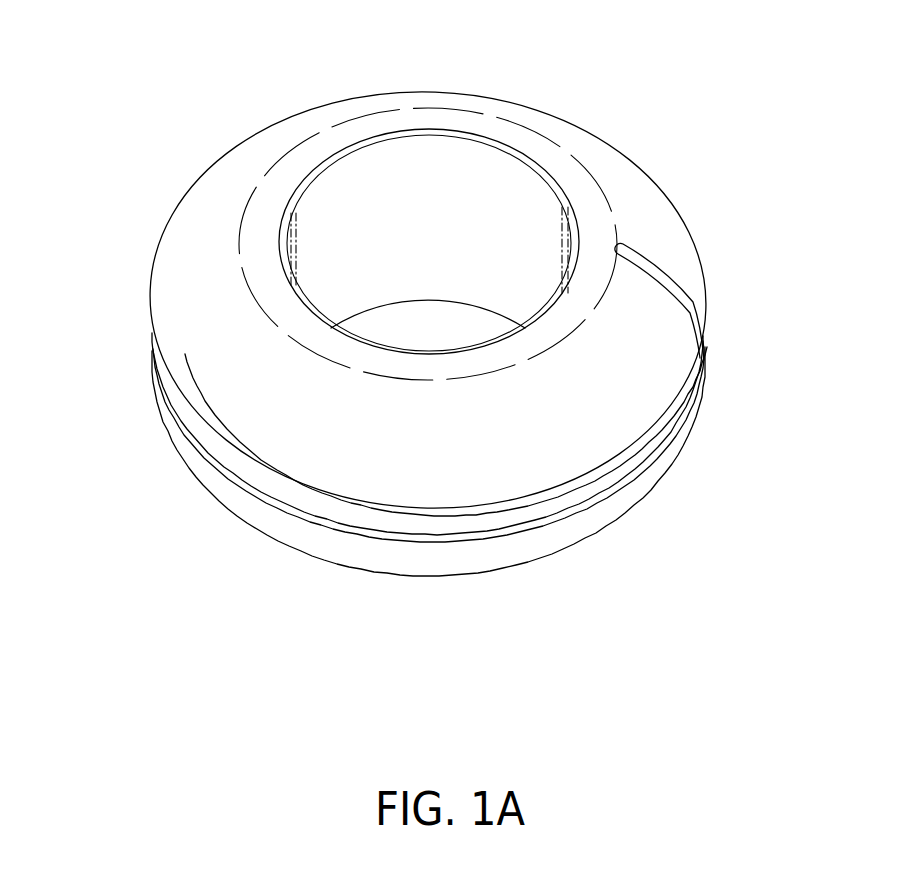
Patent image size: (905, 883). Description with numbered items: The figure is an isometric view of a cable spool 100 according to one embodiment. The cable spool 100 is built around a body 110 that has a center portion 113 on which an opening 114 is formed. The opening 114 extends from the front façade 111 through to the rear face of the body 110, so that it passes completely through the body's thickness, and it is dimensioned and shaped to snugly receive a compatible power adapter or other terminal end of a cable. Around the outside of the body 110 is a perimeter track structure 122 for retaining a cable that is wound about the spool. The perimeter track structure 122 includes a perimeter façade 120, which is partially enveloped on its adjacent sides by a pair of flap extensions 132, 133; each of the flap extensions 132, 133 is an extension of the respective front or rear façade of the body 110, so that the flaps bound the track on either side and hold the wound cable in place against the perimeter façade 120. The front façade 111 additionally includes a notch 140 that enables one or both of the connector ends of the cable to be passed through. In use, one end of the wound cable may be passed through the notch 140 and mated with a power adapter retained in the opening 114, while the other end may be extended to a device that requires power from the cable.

The cable spool 100 is at (578, 78).
The body 110 is at (658, 219).
The front façade 111 is at (179, 297).
The center portion 113 is at (302, 176).
The opening 114 is at (326, 198).
The perimeter façade 120 is at (433, 510).
The perimeter track structure 122 is at (323, 508).
The flap extension 132 is at (662, 363).
The flap extension 133 is at (630, 488).
The notch 140 is at (668, 266).